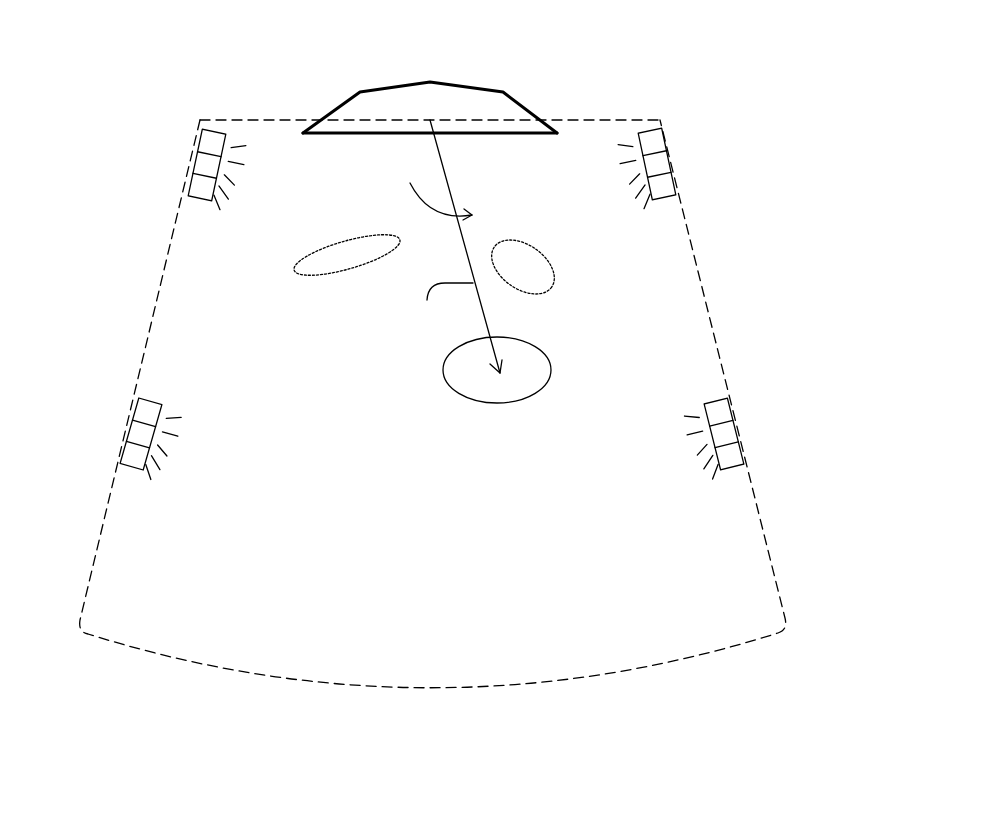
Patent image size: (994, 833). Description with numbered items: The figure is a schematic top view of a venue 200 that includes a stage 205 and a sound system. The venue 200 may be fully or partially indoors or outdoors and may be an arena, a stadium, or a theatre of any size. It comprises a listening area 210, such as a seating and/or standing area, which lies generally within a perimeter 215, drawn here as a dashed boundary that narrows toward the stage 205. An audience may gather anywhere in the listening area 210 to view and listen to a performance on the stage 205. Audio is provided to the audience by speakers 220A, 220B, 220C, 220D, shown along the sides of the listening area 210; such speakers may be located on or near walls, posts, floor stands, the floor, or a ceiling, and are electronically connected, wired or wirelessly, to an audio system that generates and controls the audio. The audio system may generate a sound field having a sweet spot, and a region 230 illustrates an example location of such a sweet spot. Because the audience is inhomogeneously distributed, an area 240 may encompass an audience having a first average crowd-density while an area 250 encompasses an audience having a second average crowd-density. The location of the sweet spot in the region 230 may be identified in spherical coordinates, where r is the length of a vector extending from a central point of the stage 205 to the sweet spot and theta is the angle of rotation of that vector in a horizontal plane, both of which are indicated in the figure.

The venue 200 is at (713, 58).
The stage 205 is at (358, 134).
The listening area 210 is at (336, 532).
The perimeter 215 is at (92, 571).
The speaker 220A is at (200, 150).
The speaker 220B is at (140, 415).
The speaker 220C is at (668, 150).
The speaker 220D is at (728, 420).
The region 230 is at (456, 391).
The area 240 is at (316, 276).
The area 250 is at (548, 291).